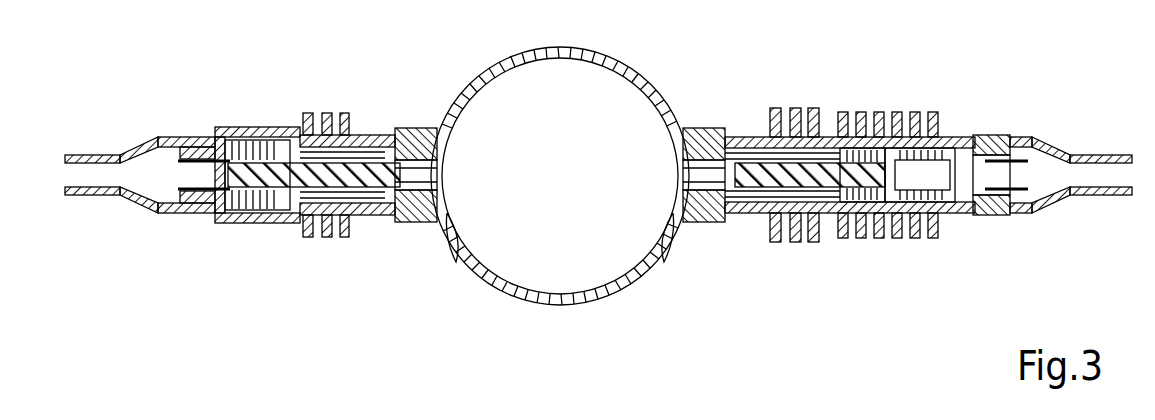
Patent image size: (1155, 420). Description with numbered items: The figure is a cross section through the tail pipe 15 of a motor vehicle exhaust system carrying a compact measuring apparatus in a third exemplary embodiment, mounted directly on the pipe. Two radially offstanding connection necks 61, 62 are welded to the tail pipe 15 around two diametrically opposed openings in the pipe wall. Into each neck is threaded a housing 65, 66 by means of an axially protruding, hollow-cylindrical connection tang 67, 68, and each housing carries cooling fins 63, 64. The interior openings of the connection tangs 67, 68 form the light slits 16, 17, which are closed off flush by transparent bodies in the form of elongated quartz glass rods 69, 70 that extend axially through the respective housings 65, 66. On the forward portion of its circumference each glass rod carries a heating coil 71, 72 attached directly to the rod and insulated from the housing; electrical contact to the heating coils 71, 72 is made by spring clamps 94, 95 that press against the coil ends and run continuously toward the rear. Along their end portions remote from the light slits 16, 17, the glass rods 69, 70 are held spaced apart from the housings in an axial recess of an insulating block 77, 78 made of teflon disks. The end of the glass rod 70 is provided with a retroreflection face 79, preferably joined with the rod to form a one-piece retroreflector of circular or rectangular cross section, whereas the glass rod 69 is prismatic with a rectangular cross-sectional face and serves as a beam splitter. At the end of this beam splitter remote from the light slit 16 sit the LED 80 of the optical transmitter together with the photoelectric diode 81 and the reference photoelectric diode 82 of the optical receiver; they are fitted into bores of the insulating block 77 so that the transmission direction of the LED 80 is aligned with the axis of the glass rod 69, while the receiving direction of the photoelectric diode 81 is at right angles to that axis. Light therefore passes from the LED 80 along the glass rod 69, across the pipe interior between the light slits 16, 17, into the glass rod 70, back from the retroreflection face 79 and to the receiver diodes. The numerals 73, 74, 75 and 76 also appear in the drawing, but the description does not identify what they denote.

The tail pipe 15 is at (472, 88).
The light slit 16 is at (660, 268).
The light slit 17 is at (452, 242).
The connection neck 61 is at (690, 130).
The connection neck 62 is at (395, 135).
The cooling fins 63 is at (842, 112).
The cooling fins 64 is at (320, 132).
The housing 65 is at (781, 100).
The housing 66 is at (298, 124).
The connection tang 67 is at (712, 136).
The connection tang 68 is at (388, 220).
The glass rod 69 is at (718, 215).
The glass rod 70 is at (258, 222).
The heating coil 71 is at (690, 222).
The heating coil 72 is at (415, 128).
The right guide tubes 73 is at (988, 158).
The right end connector 74 is at (997, 215).
The left guide tubes 75 is at (199, 160).
The left end connector 76 is at (183, 212).
The insulating block 77 is at (925, 140).
The insulating block 78 is at (217, 140).
The retroreflection face 79 is at (208, 212).
The LED 80 is at (955, 215).
The photoelectric diode 81 is at (889, 135).
The reference photoelectric diode 82 is at (887, 238).
The spring clamp 94 is at (805, 240).
The spring clamp 95 is at (306, 205).